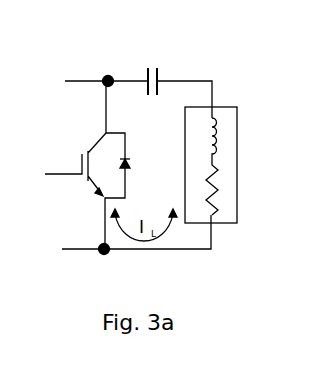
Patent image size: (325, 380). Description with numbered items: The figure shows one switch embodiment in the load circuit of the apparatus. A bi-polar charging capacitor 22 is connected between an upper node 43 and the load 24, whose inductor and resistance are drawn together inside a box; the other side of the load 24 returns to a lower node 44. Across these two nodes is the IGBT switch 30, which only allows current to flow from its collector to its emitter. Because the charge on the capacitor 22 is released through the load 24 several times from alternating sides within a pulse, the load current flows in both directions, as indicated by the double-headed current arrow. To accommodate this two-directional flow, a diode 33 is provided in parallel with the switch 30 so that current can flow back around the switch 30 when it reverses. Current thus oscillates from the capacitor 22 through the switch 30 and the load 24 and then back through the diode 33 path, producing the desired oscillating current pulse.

The positive DC link node 43 is at (108, 76).
The capacitor 22 is at (157, 68).
The switch 30 is at (96, 144).
The diode 33 is at (128, 160).
The load 24 is at (221, 107).
The negative DC link node 44 is at (107, 253).